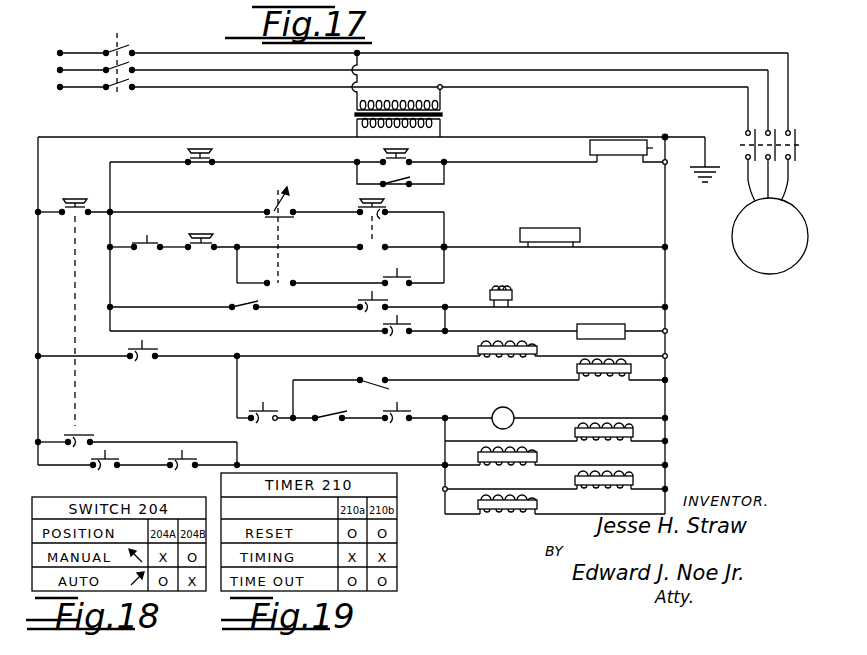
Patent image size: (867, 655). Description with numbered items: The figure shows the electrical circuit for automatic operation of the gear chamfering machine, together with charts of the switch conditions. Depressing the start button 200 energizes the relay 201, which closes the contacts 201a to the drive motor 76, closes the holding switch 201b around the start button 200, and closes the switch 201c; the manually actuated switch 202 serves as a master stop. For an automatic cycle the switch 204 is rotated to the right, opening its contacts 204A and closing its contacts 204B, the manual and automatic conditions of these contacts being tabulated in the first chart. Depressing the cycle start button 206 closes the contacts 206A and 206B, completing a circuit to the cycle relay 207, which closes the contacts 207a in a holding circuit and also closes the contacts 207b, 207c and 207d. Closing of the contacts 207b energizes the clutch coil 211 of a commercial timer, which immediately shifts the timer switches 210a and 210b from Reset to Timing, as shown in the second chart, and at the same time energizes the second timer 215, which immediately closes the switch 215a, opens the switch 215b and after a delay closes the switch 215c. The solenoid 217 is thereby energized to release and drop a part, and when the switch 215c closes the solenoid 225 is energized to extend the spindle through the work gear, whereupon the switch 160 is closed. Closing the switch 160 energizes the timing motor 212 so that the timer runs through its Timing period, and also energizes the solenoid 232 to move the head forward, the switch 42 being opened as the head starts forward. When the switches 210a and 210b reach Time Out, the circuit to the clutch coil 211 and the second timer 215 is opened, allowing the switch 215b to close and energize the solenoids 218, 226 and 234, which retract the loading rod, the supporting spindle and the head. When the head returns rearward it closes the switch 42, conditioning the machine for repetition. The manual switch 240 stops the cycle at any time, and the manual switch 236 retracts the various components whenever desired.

The drive motor 76 is at (781, 245).
The switch 42 is at (244, 309).
The switch 160 is at (328, 424).
The start button 200 is at (405, 157).
The relay 201 is at (621, 146).
The contacts 201a is at (742, 144).
The holding switch 201b is at (414, 173).
The switch 201c is at (146, 238).
The manually actuated switch 202 is at (208, 157).
The switch 204 is at (282, 192).
The contacts 204A is at (294, 214).
The contacts 204B is at (298, 274).
The cycle start button 206 is at (387, 200).
The contacts 206A is at (399, 226).
The contacts 206B is at (388, 246).
The cycle relay 207 is at (533, 228).
The contacts 207a is at (419, 273).
The contacts 207b is at (367, 312).
The contacts 207c is at (257, 425).
The contacts 207d is at (103, 470).
The switch contacts 210a is at (393, 336).
The switch contacts 210b is at (398, 424).
The clutch coil 211 is at (511, 292).
The timing motor 212 is at (510, 409).
The second timer 215 is at (578, 328).
The switch 215a is at (134, 359).
The switch 215b is at (182, 470).
The switch 215c is at (370, 384).
The solenoid 217 is at (509, 357).
The solenoid 218 is at (498, 463).
The solenoid 225 is at (592, 379).
The solenoid 226 is at (603, 486).
The solenoid 232 is at (595, 438).
The solenoid 234 is at (497, 510).
The manual switch 236 is at (67, 203).
The manual switch 240 is at (212, 238).